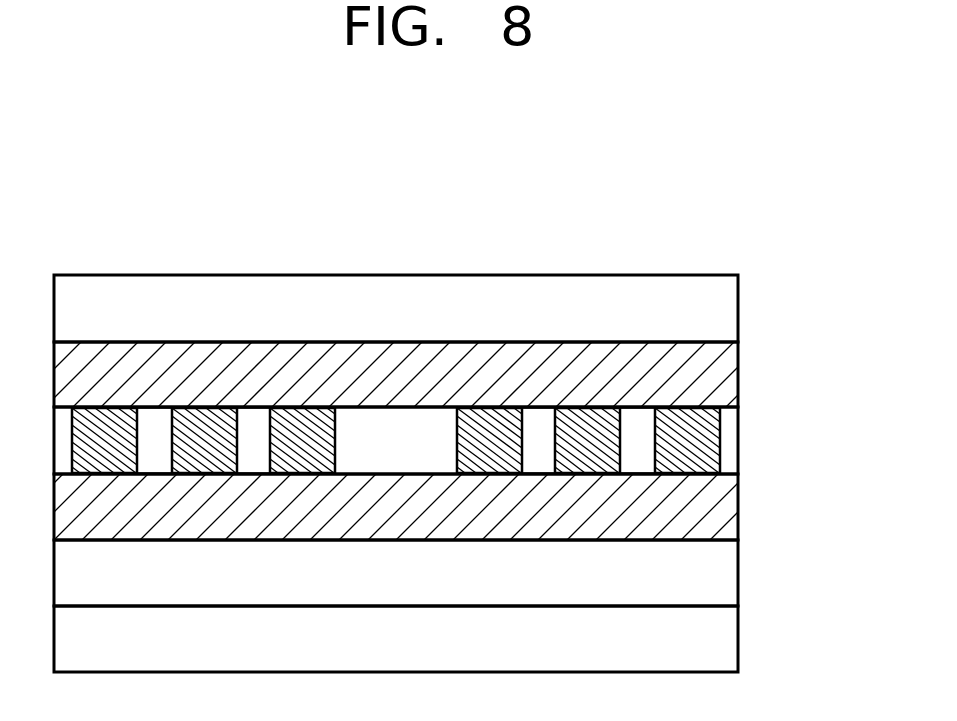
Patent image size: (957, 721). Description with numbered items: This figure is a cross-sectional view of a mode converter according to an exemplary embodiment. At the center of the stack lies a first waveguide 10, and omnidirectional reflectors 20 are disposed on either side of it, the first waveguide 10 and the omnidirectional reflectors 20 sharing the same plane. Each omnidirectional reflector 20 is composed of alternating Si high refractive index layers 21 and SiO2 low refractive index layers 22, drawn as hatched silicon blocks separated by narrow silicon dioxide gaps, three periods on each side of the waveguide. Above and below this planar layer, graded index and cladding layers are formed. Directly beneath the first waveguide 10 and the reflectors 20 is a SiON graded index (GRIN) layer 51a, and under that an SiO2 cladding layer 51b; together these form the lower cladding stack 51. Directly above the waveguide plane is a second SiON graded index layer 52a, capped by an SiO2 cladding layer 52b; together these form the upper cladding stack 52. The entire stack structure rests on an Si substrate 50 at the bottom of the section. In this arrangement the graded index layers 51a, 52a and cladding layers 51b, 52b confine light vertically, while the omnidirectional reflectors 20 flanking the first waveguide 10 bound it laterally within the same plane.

The first waveguide 10 is at (352, 423).
The omnidirectional reflector 20 is at (396, 306).
The Si high refractive index layer 21 is at (103, 422).
The SiO2 low refractive index layer 22 is at (253, 423).
The Si substrate 50 is at (723, 643).
The lower cladding stack 51 is at (469, 540).
The SiON graded index layer 51a is at (723, 512).
The SiO2 cladding layer 51b is at (723, 578).
The upper cladding stack 52 is at (469, 341).
The SiON graded index layer 52a is at (723, 378).
The SiO2 cladding layer 52b is at (723, 312).